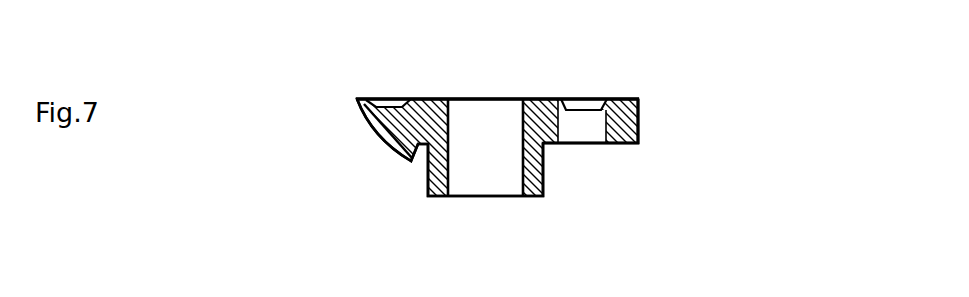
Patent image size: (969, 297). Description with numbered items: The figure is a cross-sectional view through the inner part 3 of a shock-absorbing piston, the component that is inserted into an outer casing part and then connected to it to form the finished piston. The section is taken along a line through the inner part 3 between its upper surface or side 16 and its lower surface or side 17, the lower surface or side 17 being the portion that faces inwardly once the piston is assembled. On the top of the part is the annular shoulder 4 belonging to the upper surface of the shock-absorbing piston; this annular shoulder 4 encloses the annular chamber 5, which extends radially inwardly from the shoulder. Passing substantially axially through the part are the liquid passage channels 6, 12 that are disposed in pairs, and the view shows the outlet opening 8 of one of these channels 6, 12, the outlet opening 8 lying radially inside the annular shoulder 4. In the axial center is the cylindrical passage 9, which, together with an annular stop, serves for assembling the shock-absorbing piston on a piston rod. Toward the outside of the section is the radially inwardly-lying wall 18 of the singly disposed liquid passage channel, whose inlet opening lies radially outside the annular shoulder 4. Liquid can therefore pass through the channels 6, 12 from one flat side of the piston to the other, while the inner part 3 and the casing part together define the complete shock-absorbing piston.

The inner part 3 is at (614, 113).
The annular shoulder 4 is at (362, 98).
The annular chamber 5 is at (400, 98).
The liquid passage channel 6 is at (597, 125).
The outlet opening 8 is at (582, 125).
The cylindrical passage 9 is at (487, 145).
The liquid passage channels disposed in pairs 12 is at (630, 240).
The upper surface or side 16 is at (306, 97).
The lower surface or side 17 is at (472, 179).
The radially inwardly-lying wall 18 is at (373, 134).